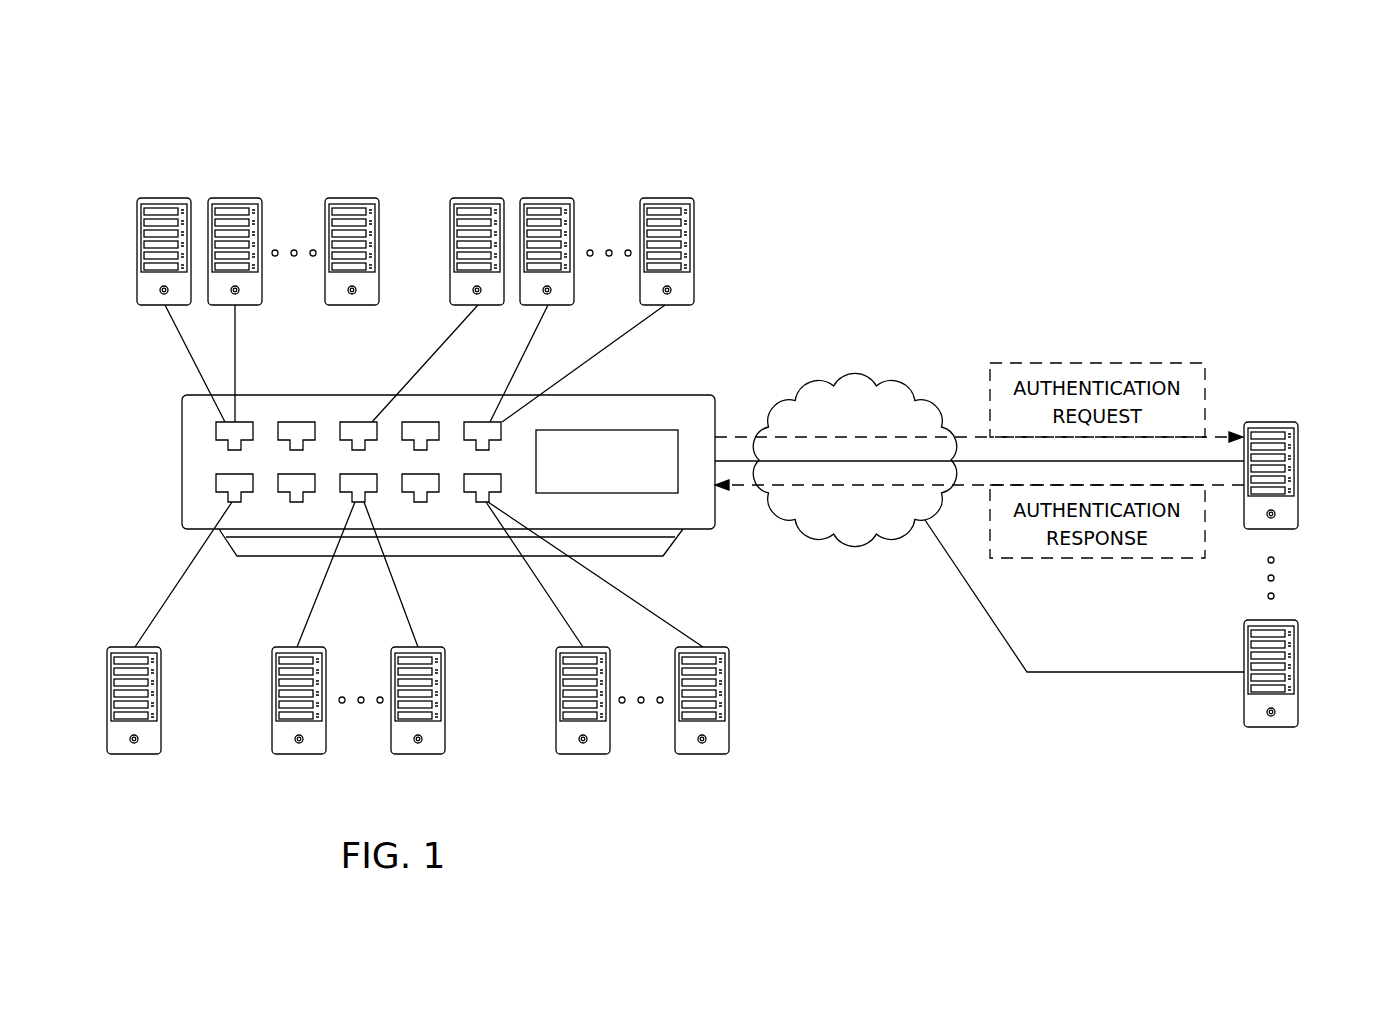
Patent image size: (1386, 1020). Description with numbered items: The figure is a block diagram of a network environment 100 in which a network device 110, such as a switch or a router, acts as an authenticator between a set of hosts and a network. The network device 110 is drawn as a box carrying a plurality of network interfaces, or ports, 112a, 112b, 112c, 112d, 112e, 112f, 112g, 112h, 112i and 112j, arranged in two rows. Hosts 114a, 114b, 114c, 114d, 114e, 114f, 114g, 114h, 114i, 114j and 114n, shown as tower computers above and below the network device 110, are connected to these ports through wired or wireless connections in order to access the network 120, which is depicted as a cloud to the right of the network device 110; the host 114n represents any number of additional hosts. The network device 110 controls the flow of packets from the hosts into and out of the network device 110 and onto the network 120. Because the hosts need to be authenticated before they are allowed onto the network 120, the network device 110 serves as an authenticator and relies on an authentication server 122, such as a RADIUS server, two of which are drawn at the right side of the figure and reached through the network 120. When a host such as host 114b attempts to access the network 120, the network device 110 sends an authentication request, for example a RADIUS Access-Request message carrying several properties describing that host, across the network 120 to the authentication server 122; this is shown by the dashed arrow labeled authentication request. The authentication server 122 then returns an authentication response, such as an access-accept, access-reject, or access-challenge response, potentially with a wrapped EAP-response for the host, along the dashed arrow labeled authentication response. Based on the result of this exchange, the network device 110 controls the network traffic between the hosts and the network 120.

The network environment 100 is at (1102, 116).
The network device 110 is at (181, 463).
The network interface 112a is at (216, 428).
The network interface 112b is at (216, 488).
The network interface 112c is at (292, 422).
The network interface 112d is at (344, 477).
The network interface 112e is at (358, 422).
The network interface 112f is at (276, 492).
The network interface 112g is at (423, 502).
The network interface 112h is at (420, 422).
The network interface 112i is at (502, 431).
The network interface 112j is at (486, 502).
The host 114a is at (163, 198).
The host 114b is at (233, 198).
The host 114c is at (476, 198).
The host 114d is at (546, 198).
The host 114e is at (666, 198).
The host 114f is at (134, 755).
The host 114g is at (300, 755).
The host 114h is at (418, 755).
The host 114i is at (584, 755).
The host 114j is at (702, 755).
The host 114n is at (353, 198).
The network 120 is at (852, 533).
The authentication server 122 is at (1271, 421).